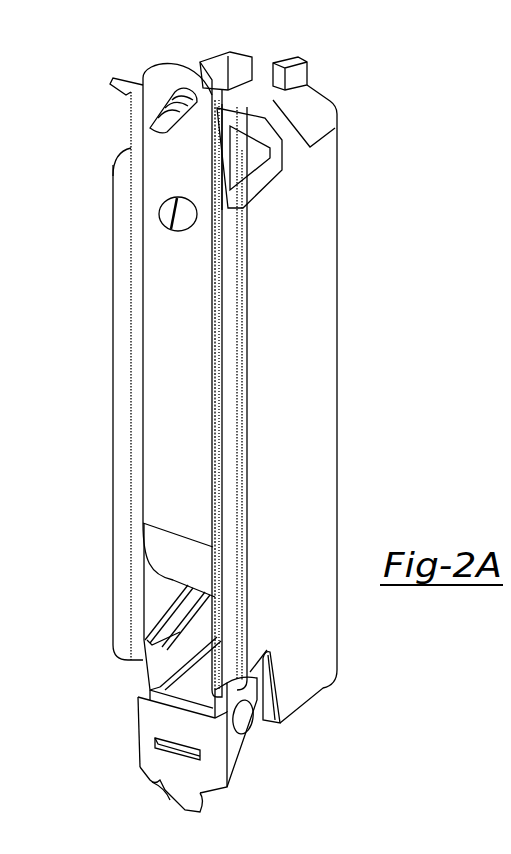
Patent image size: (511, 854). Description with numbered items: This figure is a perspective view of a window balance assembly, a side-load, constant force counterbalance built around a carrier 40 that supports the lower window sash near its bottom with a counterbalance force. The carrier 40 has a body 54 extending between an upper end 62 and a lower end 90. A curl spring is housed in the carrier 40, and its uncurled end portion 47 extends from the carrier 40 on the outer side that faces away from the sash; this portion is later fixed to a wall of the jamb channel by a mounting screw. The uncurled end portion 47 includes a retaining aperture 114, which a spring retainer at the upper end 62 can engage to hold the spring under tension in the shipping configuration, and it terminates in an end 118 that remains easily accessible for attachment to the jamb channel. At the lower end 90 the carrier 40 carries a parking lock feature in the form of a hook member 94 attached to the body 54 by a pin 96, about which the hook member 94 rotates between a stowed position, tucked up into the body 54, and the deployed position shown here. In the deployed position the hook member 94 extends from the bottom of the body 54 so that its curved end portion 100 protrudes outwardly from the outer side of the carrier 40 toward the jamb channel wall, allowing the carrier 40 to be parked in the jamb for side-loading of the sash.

The carrier 40 is at (347, 407).
The uncurled end portion 47 is at (167, 288).
The body 54 is at (318, 216).
The upper end 62 is at (270, 62).
The lower end 90 is at (343, 693).
The hook member 94 is at (233, 767).
The pin 96 is at (243, 723).
The curved end portion 100 is at (160, 803).
The retaining aperture 114 is at (158, 233).
The end 118 is at (163, 67).